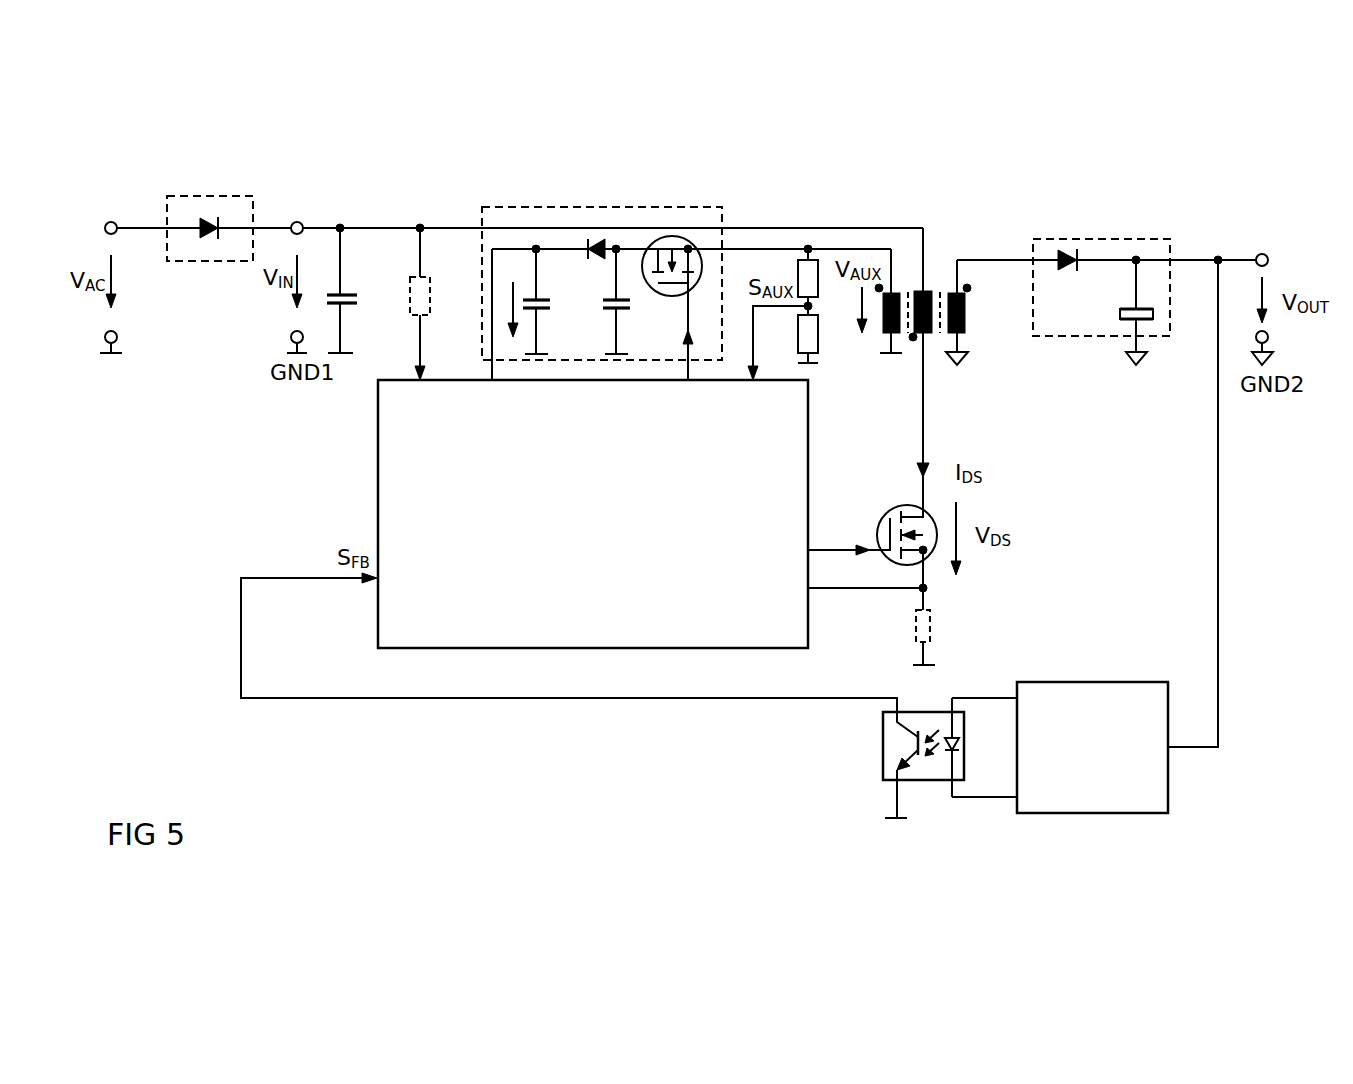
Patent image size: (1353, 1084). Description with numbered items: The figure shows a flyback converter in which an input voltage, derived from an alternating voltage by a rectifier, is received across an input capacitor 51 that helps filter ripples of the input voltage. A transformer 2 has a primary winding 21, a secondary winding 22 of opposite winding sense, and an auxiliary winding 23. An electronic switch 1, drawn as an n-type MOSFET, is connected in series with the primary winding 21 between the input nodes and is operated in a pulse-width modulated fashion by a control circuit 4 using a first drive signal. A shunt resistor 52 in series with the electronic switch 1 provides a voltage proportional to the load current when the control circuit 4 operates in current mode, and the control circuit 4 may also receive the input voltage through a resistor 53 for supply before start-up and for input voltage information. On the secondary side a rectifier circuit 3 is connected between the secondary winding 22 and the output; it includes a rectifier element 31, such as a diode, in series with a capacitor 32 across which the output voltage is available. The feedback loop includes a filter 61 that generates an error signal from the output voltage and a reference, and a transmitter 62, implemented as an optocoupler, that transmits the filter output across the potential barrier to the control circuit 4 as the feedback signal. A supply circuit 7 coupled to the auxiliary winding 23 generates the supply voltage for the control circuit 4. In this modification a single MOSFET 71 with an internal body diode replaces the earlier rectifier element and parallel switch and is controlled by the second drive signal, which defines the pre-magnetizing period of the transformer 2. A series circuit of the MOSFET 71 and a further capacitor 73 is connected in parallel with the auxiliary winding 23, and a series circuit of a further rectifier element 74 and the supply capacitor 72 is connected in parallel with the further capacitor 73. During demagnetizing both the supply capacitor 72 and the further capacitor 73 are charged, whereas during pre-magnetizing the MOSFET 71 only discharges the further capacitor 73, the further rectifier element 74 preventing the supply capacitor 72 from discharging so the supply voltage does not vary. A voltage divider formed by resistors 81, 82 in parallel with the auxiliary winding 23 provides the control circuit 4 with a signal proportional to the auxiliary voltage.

The electronic switch 1 is at (882, 510).
The transformer 2 is at (938, 290).
The primary winding 21 is at (918, 292).
The secondary winding 22 is at (963, 327).
The auxiliary winding 23 is at (880, 328).
The rectifier circuit 3 is at (1101, 272).
The rectifier element 31 is at (1073, 278).
The capacitor 32 is at (1121, 312).
The control circuit 4 is at (375, 483).
The supply circuit 7 is at (686, 271).
The MOSFET 71 is at (672, 308).
The supply capacitor 72 is at (546, 301).
The further capacitor 73 is at (626, 301).
The further rectifier element 74 is at (594, 264).
The input capacitor 51 is at (357, 298).
The shunt resistor 52 is at (933, 632).
The resistor 53 is at (430, 298).
The filter 61 is at (1102, 682).
The transmitter 62 is at (880, 753).
The voltage divider resistor 81 is at (792, 282).
The voltage divider resistor 82 is at (794, 339).